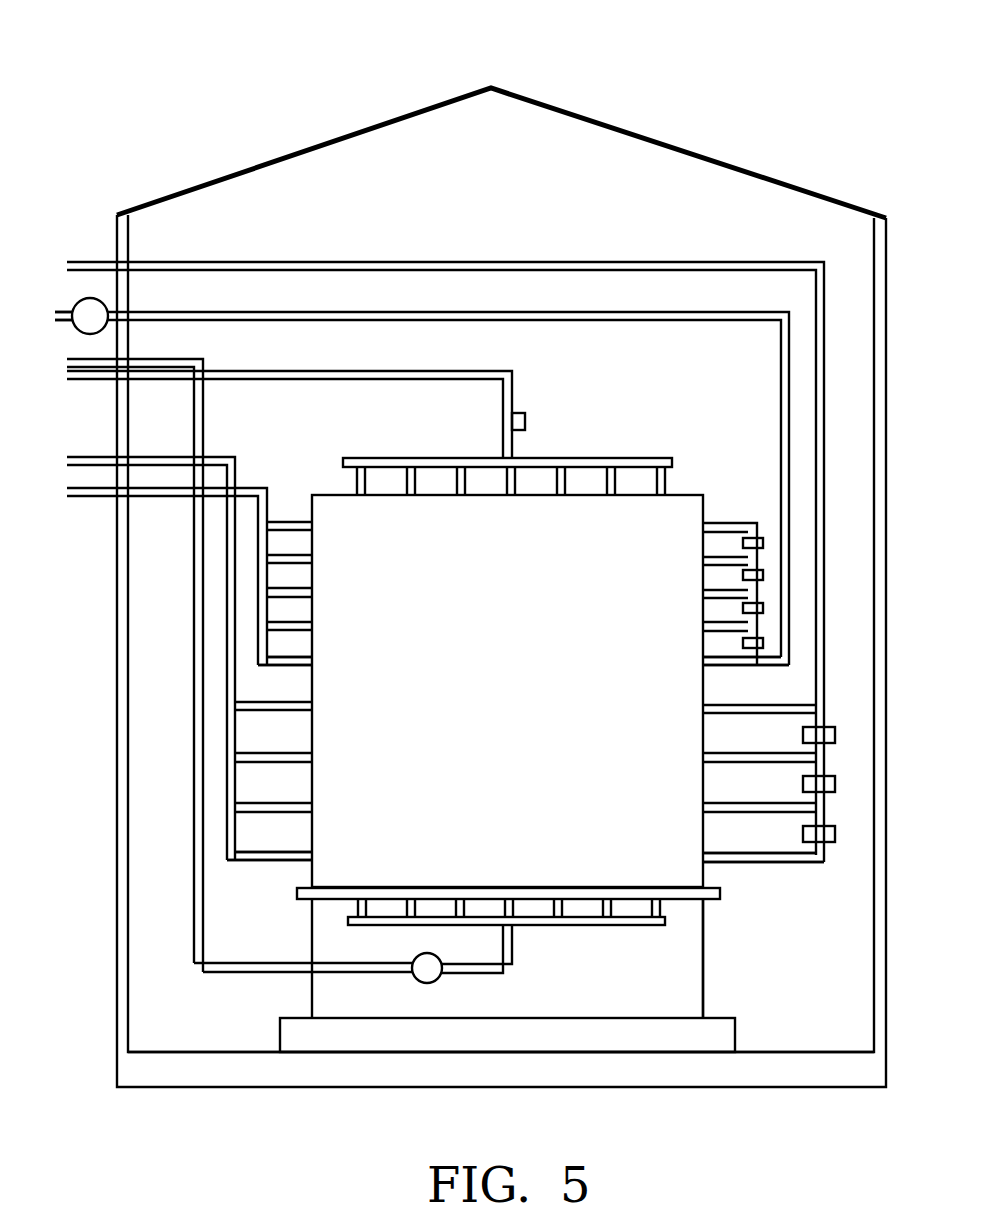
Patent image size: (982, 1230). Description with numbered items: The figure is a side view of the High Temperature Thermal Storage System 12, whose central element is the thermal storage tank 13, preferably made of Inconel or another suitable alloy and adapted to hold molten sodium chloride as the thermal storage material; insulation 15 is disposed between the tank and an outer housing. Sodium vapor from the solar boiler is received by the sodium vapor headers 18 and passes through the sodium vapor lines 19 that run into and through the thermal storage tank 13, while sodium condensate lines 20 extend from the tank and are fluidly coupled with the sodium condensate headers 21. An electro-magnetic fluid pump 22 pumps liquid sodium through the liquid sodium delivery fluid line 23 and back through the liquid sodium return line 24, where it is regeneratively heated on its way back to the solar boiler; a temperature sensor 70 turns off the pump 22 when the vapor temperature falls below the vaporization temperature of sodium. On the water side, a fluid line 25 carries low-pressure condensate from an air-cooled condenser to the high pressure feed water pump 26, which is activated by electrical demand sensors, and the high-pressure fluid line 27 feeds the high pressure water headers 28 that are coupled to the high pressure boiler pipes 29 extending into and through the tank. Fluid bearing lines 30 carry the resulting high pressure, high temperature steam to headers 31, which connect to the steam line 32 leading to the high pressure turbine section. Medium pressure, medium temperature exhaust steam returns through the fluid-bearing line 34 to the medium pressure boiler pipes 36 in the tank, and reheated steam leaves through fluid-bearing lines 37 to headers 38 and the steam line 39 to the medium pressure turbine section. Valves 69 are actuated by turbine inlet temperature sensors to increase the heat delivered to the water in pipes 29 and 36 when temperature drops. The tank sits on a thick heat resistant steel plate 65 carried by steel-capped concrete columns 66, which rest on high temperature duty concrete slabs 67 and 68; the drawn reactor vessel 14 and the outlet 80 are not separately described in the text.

The High Temperature Thermal Storage System 12 is at (456, 90).
The thermal storage tank 13 is at (703, 493).
The reactor vessel 14 is at (492, 679).
The insulation 15 is at (616, 396).
The sodium vapor headers 18 is at (375, 371).
The sodium vapor lines 19 is at (352, 478).
The sodium condensate lines 20 is at (660, 907).
The sodium condensate headers 21 is at (542, 927).
The electro-magnetic fluid pump 22 is at (430, 978).
The liquid sodium delivery fluid line 23 is at (297, 972).
The liquid sodium return line 24 is at (172, 359).
The fluid line 25 is at (62, 307).
The high pressure feed water pump 26 is at (105, 302).
The fluid line 27 is at (535, 312).
The high pressure water headers 28 is at (768, 667).
The high pressure boiler pipes 29 is at (727, 523).
The fluid bearing lines 30 is at (292, 665).
The headers 31 is at (262, 632).
The steam line 32 is at (150, 498).
The fluid-bearing line 34 is at (570, 262).
The medium pressure, medium temperature boiler pipes 36 is at (740, 803).
The fluid-bearing lines 37 is at (275, 862).
The headers 38 is at (227, 815).
The steam line 39 is at (175, 456).
The heat resistant steel plate 65 is at (720, 893).
The concrete columns 66 is at (705, 966).
The concrete slab 67 is at (740, 1031).
The concrete slab 68 is at (838, 1050).
The valves 69 is at (765, 648).
The temperature sensor 70 is at (527, 413).
The lower outlet of right lower heat exchanger 80 is at (800, 862).